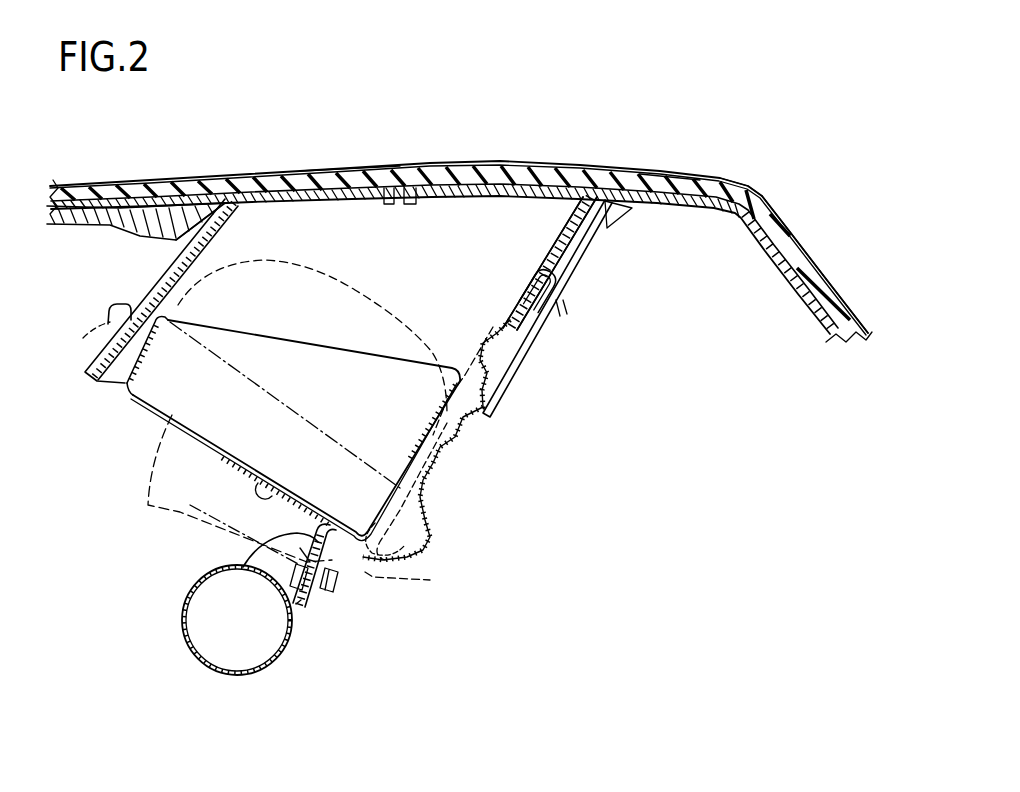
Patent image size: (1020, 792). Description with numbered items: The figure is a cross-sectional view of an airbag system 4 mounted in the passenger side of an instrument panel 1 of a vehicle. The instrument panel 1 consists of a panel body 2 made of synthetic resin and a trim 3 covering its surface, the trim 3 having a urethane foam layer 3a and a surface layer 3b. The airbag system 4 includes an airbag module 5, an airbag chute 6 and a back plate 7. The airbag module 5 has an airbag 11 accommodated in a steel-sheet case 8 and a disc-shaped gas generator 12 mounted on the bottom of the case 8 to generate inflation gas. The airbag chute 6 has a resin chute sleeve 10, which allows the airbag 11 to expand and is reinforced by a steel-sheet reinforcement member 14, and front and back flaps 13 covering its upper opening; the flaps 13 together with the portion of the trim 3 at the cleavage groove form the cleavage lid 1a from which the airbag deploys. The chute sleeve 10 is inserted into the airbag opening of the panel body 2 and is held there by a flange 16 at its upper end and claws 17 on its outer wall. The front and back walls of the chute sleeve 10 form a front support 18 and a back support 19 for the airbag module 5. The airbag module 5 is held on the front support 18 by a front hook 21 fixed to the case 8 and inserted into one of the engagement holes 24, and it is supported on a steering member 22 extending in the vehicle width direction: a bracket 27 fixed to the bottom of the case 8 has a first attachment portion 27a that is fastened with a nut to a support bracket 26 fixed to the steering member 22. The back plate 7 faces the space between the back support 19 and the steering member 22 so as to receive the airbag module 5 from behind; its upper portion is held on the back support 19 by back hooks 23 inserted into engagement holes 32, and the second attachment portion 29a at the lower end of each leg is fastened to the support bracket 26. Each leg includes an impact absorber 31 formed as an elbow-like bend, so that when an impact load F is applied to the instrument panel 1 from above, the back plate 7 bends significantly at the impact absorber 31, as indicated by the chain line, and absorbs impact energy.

The instrument panel 1 is at (807, 300).
The cleavage lid 1a is at (433, 160).
The panel body 2 is at (760, 240).
The trim 3 is at (833, 263).
The urethane foam layer 3a is at (737, 190).
The surface layer 3b is at (797, 217).
The airbag system 4 is at (86, 310).
The airbag module 5 is at (150, 420).
The airbag chute 6 is at (230, 197).
The back plate 7 is at (433, 505).
The case 8 is at (123, 390).
The chute sleeve 10 is at (566, 232).
The airbag 11 is at (350, 272).
The gas generator 12 is at (175, 493).
The flaps 13 is at (348, 170).
The reinforcement member 14 is at (547, 320).
The flange 16 is at (664, 190).
The claws 17 is at (173, 240).
The front support 18 is at (213, 247).
The back support 19 is at (508, 307).
The front hook 21 is at (107, 307).
The steering member 22 is at (253, 673).
The back hook 23 is at (565, 287).
The engagement holes 24 is at (110, 328).
The support bracket 26 is at (253, 543).
The bracket 27 is at (279, 500).
The first attachment portion 27a is at (293, 607).
The second attachment portion 29a is at (307, 603).
The impact absorber 31 is at (433, 580).
The engagement holes 32 is at (562, 307).
The impact load F is at (633, 110).